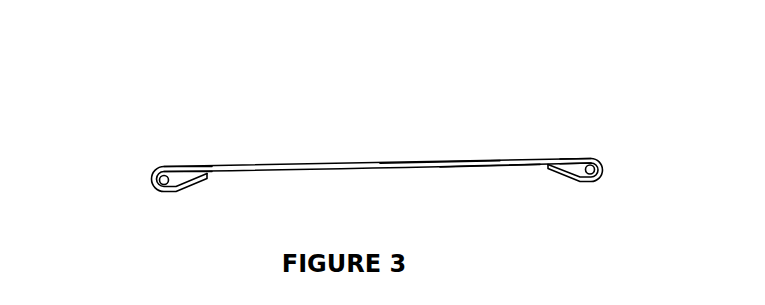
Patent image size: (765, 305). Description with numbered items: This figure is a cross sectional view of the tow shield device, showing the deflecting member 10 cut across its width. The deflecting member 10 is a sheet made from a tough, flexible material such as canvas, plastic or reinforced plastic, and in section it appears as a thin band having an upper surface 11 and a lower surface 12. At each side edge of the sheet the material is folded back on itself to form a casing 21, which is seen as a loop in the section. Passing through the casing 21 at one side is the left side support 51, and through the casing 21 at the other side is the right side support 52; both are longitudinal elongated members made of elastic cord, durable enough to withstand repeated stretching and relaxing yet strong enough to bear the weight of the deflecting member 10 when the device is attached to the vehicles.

The deflecting member 10 is at (316, 165).
The upper surface 11 is at (465, 162).
The lower surface 12 is at (515, 166).
The casing 21 is at (173, 190).
The left side support 51 is at (603, 158).
The right side support 52 is at (152, 185).